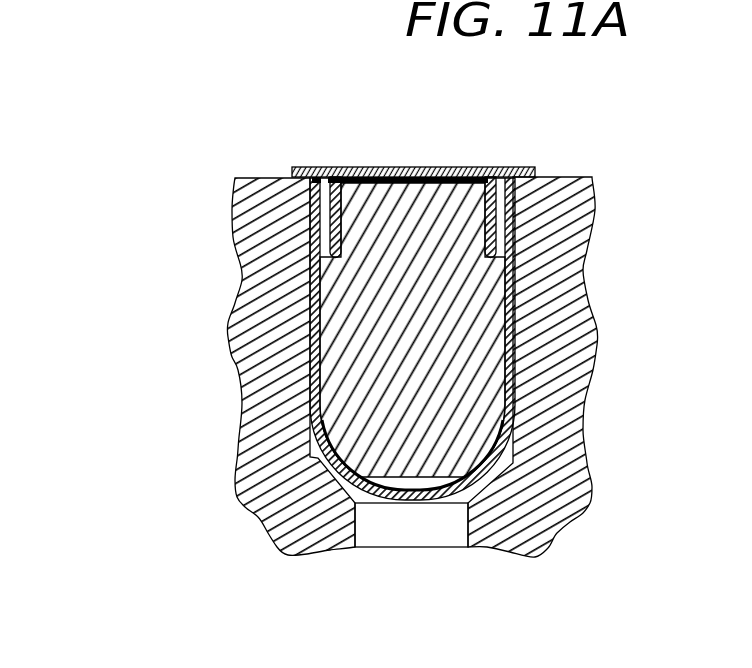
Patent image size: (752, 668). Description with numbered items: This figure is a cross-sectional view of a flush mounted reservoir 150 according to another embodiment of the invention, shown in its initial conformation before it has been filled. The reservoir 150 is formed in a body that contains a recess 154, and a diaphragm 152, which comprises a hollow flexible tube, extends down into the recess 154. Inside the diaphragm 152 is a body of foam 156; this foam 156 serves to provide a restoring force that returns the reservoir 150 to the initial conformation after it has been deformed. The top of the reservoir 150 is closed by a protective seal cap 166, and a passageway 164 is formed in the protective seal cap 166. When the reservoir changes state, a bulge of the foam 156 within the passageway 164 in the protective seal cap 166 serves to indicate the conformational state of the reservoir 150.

The reservoir 150 is at (145, 226).
The diaphragm 152 is at (311, 285).
The recess 154 is at (338, 482).
The foam 156 is at (360, 363).
The passageway 164 is at (422, 174).
The protective seal cap 166 is at (363, 168).